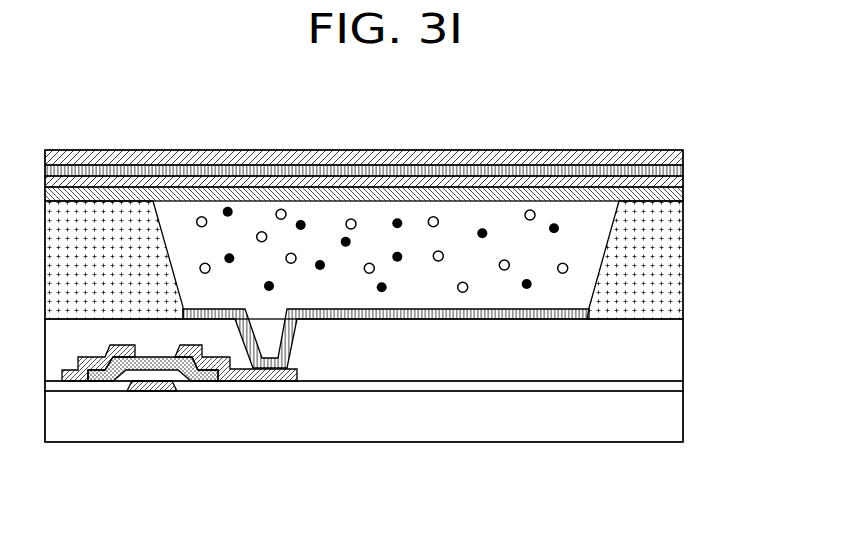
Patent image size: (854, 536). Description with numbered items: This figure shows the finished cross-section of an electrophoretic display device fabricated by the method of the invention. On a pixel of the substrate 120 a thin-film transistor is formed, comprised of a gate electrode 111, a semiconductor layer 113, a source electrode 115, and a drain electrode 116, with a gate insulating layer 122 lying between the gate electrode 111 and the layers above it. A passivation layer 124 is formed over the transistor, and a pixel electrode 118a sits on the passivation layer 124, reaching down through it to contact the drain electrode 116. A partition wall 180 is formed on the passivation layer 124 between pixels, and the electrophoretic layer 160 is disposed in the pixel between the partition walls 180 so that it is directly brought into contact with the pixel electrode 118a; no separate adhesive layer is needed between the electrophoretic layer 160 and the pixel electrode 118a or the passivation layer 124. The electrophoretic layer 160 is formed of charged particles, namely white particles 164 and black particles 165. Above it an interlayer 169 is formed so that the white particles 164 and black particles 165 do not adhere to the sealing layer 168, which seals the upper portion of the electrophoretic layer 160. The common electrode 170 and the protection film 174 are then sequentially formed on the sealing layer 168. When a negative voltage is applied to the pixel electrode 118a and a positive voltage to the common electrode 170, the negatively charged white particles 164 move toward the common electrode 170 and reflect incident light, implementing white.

The gate electrode 111 is at (152, 388).
The semiconductor layer 113 is at (106, 378).
The source electrode 115 is at (70, 376).
The drain electrode 116 is at (248, 376).
The pixel electrode 118a is at (420, 308).
The substrate 120 is at (668, 425).
The gate insulating layer 122 is at (668, 383).
The passivation layer 124 is at (668, 350).
The electrophoretic layer 160 is at (401, 202).
The white particles 164 is at (351, 218).
The black particles 165 is at (300, 220).
The sealing layer 168 is at (672, 185).
The interlayer 169 is at (668, 196).
The common electrode 170 is at (672, 172).
The protection film 174 is at (670, 152).
The partition wall 180 is at (668, 260).